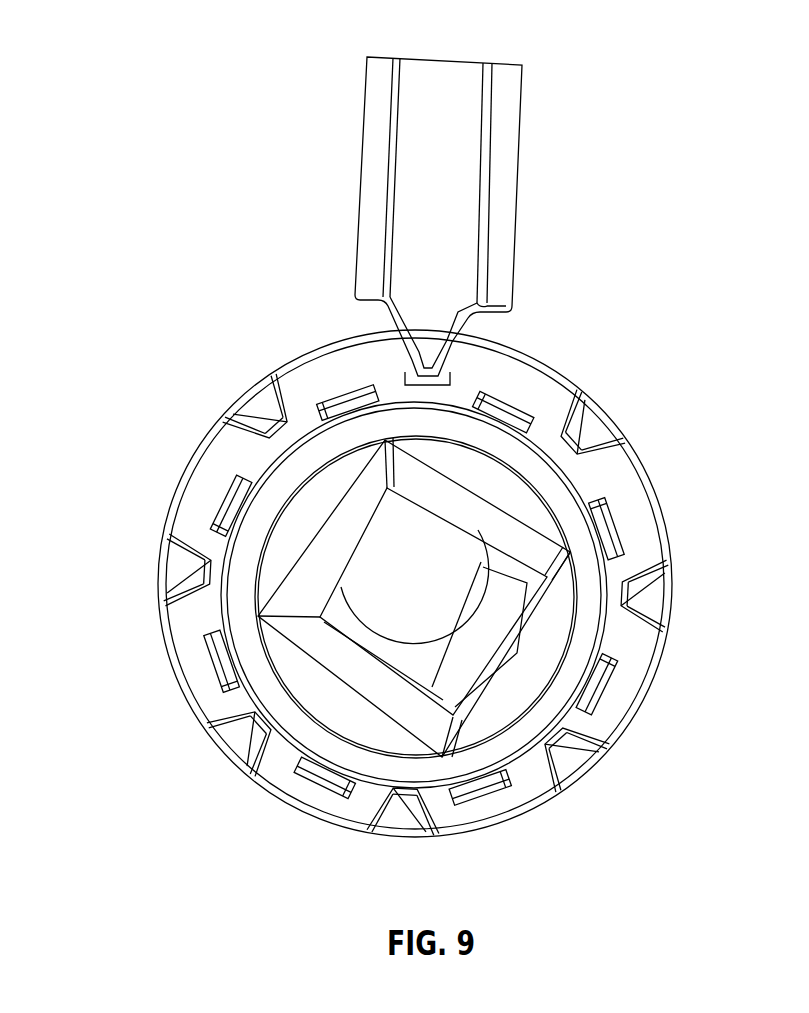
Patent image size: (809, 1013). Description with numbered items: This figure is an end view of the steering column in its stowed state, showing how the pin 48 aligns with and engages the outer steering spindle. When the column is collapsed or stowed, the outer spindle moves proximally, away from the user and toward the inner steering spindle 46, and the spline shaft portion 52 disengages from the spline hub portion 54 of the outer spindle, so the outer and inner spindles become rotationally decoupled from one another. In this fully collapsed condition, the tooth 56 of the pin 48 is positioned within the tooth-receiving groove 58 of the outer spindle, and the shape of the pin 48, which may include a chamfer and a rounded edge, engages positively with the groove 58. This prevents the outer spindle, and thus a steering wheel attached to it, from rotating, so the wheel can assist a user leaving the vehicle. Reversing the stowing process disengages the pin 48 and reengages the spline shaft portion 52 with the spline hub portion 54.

The inner steering spindle 46 is at (315, 653).
The pin 48 is at (438, 158).
The spline shaft portion 52 is at (603, 522).
The spline hub portion 54 is at (617, 460).
The tooth 56 is at (428, 343).
The tooth-receiving groove 58 is at (455, 357).